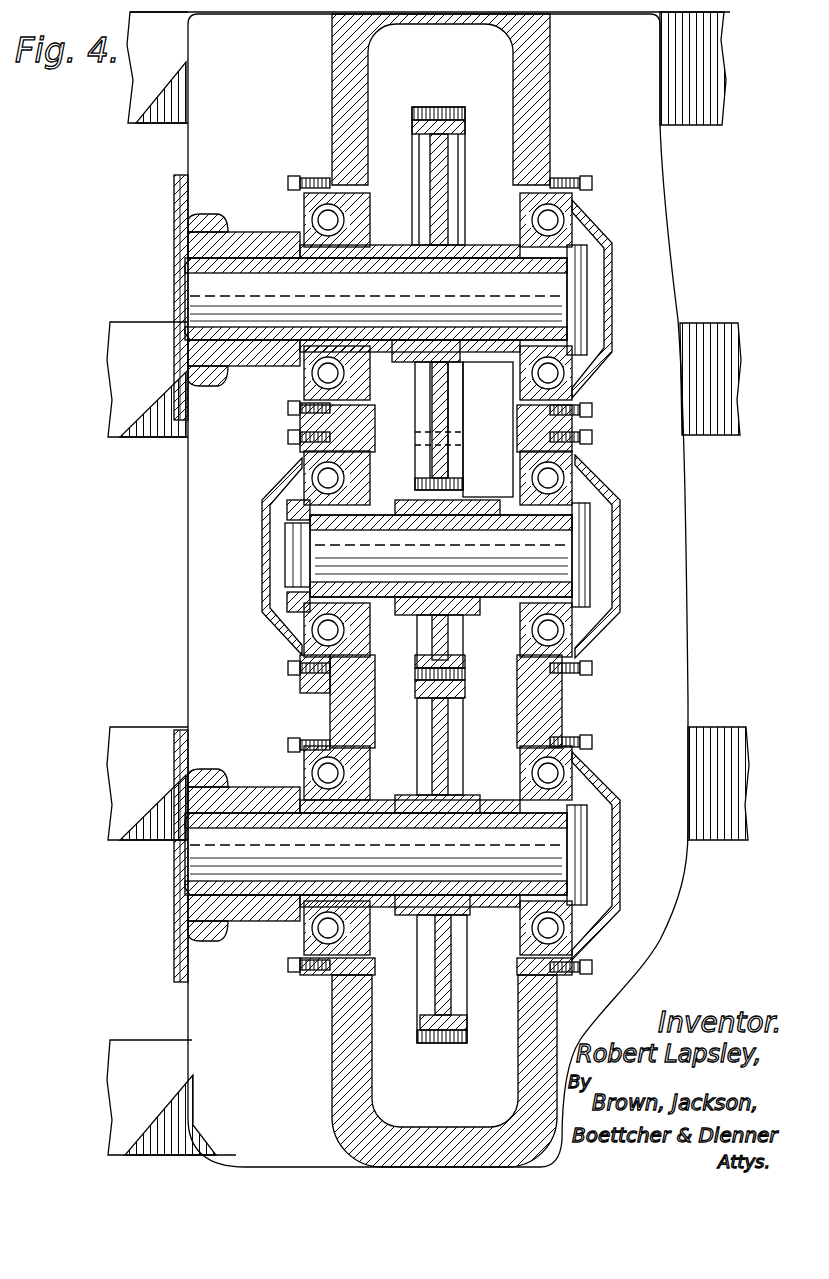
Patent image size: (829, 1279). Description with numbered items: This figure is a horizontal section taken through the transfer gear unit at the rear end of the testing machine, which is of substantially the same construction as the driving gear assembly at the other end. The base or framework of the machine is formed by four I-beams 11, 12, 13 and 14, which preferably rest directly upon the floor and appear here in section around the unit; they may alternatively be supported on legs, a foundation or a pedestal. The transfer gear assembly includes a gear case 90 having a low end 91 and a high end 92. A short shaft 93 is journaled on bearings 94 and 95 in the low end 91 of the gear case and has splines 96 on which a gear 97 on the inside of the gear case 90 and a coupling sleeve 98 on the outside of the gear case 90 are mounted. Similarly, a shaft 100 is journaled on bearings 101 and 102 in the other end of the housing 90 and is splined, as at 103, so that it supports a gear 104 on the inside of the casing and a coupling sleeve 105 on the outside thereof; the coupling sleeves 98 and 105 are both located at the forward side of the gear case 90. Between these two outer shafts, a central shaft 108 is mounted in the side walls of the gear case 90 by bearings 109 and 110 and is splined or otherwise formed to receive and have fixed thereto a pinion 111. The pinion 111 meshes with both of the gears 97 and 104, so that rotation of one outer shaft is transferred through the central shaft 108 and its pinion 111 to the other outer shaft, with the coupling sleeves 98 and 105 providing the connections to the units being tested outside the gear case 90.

The I-beam 11 is at (136, 1046).
The I-beam 12 is at (135, 840).
The I-beam 13 is at (135, 437).
The I-beam 14 is at (147, 125).
The gear case 90 is at (322, 1015).
The low end 91 is at (330, 1070).
The high end 92 is at (330, 62).
The short shaft 93 is at (488, 808).
The bearing 94 is at (355, 778).
The bearing 95 is at (580, 778).
The splines 96 is at (386, 814).
The gear 97 is at (455, 692).
The coupling sleeve 98 is at (222, 782).
The shaft 100 is at (477, 262).
The bearing 101 is at (352, 226).
The bearing 102 is at (580, 225).
The splines 103 is at (288, 262).
The gear 104 is at (438, 106).
The coupling sleeve 105 is at (230, 215).
The central shaft 108 is at (488, 535).
The bearing 109 is at (352, 470).
The bearing 110 is at (580, 470).
The pinion 111 is at (452, 641).